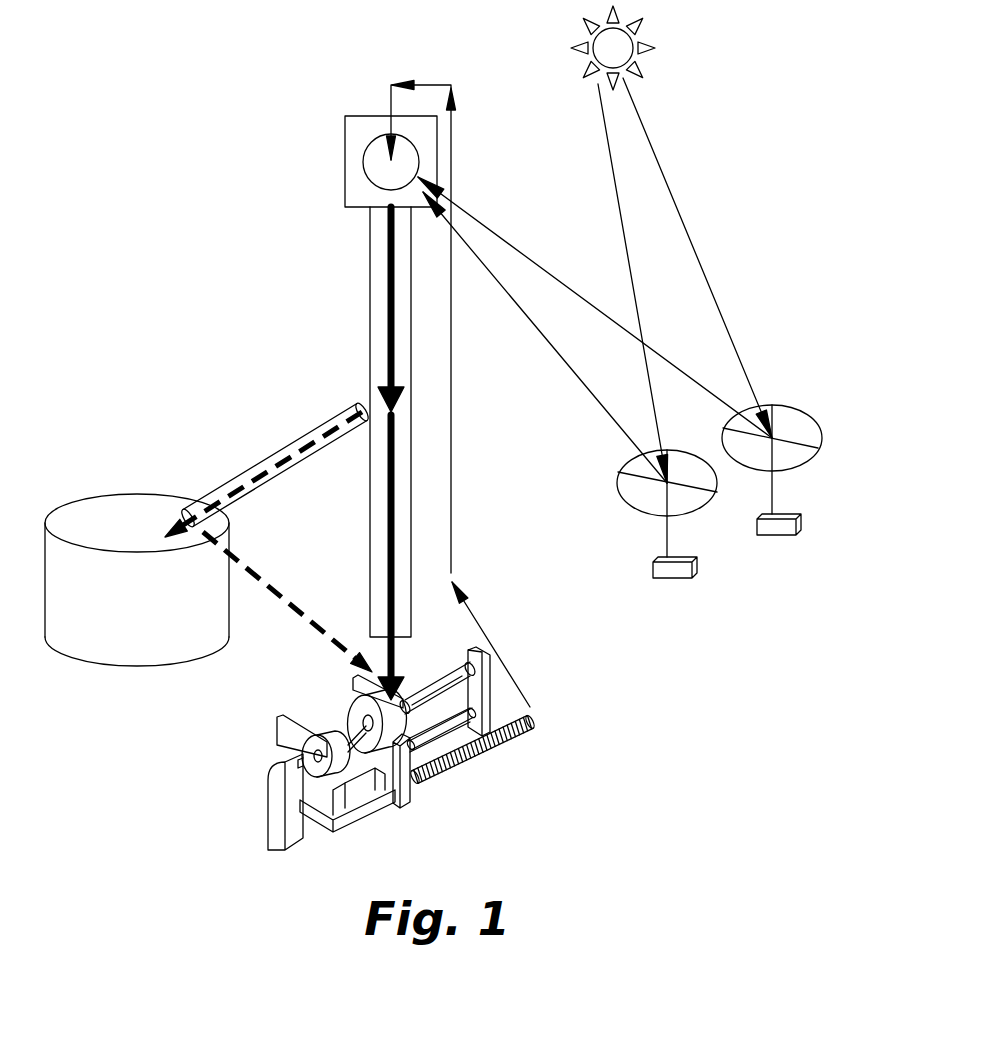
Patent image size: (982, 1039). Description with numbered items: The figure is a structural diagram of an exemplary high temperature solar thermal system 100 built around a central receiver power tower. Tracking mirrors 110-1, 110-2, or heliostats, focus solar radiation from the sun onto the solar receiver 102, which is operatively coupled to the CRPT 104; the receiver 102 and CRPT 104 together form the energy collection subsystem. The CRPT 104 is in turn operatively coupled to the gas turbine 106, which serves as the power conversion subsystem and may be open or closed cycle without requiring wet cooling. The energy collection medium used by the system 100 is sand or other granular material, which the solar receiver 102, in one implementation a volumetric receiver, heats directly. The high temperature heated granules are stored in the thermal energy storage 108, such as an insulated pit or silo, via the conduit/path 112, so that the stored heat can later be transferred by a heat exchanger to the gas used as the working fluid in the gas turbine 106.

The high temperature solar thermal system 100 is at (140, 177).
The solar receiver 102 is at (363, 116).
The CRPT 104 is at (369, 248).
The gas turbine 106 is at (267, 798).
The thermal energy storage 108 is at (163, 528).
The tracking mirror 110-1 is at (618, 483).
The tracking mirror 110-2 is at (825, 440).
The conduit/path 112 is at (305, 437).